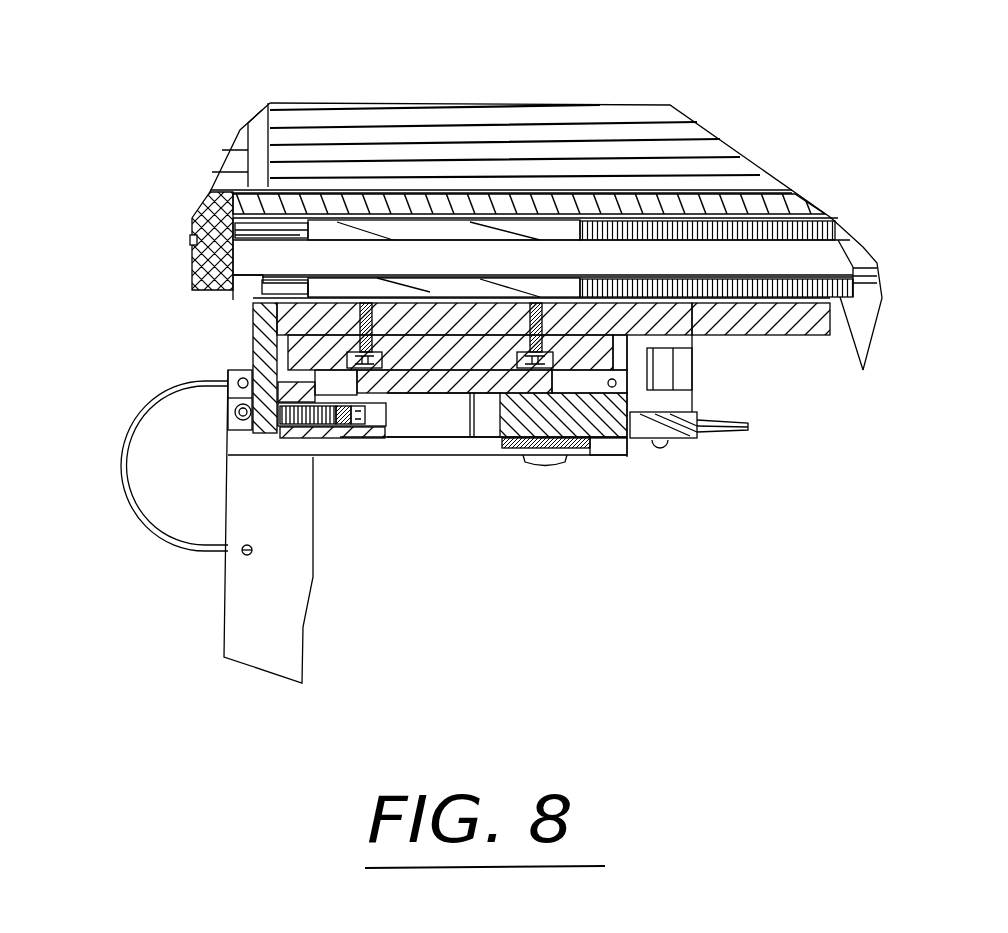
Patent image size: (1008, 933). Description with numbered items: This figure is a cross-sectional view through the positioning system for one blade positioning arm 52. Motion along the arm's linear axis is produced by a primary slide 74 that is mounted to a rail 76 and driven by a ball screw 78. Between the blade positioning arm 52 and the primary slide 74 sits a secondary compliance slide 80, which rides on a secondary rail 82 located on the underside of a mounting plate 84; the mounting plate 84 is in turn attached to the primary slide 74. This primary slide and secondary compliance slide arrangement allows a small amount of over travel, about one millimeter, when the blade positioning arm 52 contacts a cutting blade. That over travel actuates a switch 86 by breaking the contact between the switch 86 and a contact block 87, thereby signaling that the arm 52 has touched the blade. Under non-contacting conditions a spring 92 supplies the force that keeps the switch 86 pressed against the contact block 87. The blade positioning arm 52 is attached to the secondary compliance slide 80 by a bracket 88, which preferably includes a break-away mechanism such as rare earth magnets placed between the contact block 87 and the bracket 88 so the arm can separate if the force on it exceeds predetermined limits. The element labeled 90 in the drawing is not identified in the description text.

The blade positioning arm 52 is at (245, 608).
The primary slide 74 is at (343, 287).
The rail 76 is at (540, 207).
The ball screw 78 is at (763, 263).
The secondary compliance slide 80 is at (448, 378).
The secondary rail 82 is at (315, 342).
The mounting plate 84 is at (733, 318).
The switch 86 is at (687, 443).
The contact block 87 is at (597, 440).
The bracket 88 is at (617, 450).
The pad 90 is at (577, 447).
The spring 92 is at (337, 423).